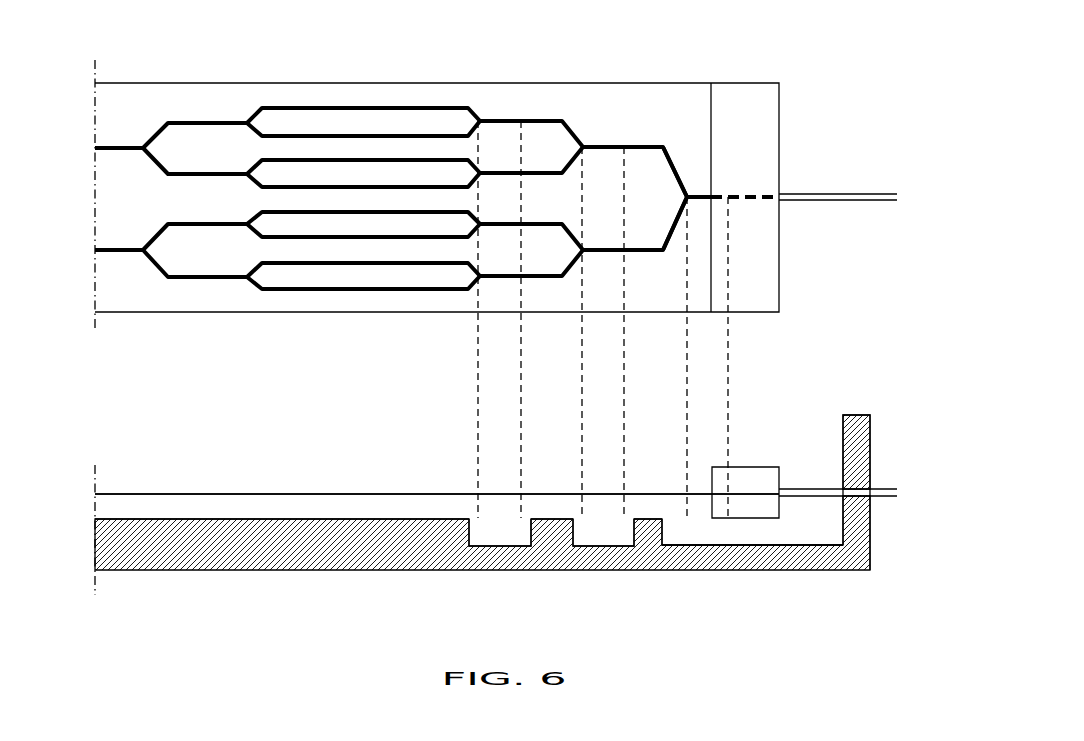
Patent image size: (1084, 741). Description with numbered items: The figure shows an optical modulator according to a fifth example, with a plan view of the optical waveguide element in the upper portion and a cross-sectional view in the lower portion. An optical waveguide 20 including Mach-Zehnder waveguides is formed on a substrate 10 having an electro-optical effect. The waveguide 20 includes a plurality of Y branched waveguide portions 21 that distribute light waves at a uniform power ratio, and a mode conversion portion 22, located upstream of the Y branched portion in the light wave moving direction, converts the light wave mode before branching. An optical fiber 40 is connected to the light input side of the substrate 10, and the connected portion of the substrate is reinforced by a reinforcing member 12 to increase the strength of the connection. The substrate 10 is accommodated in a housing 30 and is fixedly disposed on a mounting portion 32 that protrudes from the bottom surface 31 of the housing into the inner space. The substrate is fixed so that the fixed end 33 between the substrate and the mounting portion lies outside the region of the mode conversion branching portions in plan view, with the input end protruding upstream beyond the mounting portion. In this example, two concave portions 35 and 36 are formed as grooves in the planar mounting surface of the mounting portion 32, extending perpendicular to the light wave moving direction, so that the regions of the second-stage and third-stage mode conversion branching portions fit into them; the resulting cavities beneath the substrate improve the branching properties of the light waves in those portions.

The substrate 10 is at (541, 83).
The reinforcing member 12 is at (737, 100).
The optical waveguide 20 is at (629, 136).
The Y branched waveguide portion 21 is at (691, 185).
The mode conversion portion 22 is at (707, 209).
The optical fiber 40 is at (815, 193).
The housing 30 is at (870, 436).
The bottom surface 31 is at (806, 537).
The mounting portion 32 is at (330, 518).
The fixed end 33 is at (665, 509).
The concave portion 35 is at (608, 552).
The concave portion 36 is at (500, 552).